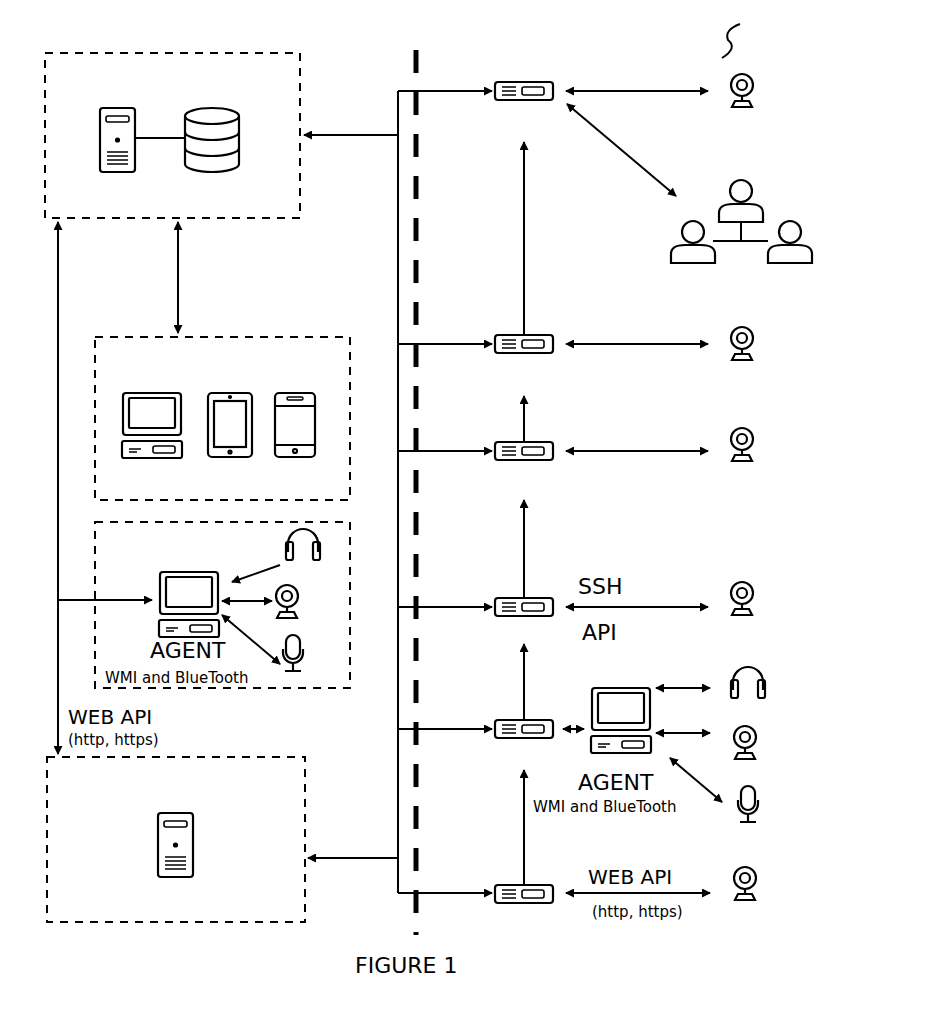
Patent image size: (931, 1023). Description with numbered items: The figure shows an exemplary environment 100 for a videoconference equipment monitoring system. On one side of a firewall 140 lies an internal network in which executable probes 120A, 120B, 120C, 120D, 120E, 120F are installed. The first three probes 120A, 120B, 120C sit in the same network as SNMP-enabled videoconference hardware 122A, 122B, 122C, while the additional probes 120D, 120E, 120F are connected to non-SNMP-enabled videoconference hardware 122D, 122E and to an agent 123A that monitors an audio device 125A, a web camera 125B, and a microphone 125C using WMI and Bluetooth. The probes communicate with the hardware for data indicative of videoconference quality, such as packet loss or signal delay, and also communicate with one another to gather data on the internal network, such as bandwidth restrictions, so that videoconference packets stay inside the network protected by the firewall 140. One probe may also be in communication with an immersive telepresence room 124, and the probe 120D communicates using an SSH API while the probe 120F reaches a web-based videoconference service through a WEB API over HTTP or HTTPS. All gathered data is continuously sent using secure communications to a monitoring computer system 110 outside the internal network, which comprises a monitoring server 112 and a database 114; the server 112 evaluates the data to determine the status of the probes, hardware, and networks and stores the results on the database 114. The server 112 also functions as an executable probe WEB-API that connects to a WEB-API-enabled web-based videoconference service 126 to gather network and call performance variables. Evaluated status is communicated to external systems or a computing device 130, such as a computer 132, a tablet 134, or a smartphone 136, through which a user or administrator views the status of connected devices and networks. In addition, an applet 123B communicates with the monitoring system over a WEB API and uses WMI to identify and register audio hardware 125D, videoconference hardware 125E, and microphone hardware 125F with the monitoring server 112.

The environment 100 is at (752, 40).
The monitoring computer system 110 is at (172, 135).
The monitoring server 112 is at (117, 156).
The database 114 is at (212, 156).
The executable probe 120A is at (524, 108).
The executable probe 120B is at (524, 361).
The executable probe 120C is at (524, 468).
The executable probe 120D is at (524, 621).
The executable probe 120E is at (524, 742).
The executable probe 120F is at (524, 907).
The videoconference hardware 122A is at (739, 109).
The videoconference hardware 122B is at (741, 363).
The videoconference hardware 122C is at (743, 466).
The videoconference hardware 122D is at (741, 612).
The videoconference hardware 122E is at (742, 901).
The agent 123A is at (621, 710).
The applet 123B is at (189, 593).
The immersive telepresence room 124 is at (741, 236).
The audio device 125A is at (748, 696).
The web camera 125B is at (748, 755).
The microphone 125C is at (748, 817).
The audio hardware 125D is at (305, 558).
The videoconference hardware 125E is at (309, 603).
The microphone hardware 125F is at (314, 655).
The web-based videoconference service 126 is at (176, 839).
The computing device 130 is at (222, 418).
The computer 132 is at (152, 446).
The tablet 134 is at (230, 446).
The smartphone 136 is at (295, 446).
The firewall 140 is at (420, 492).